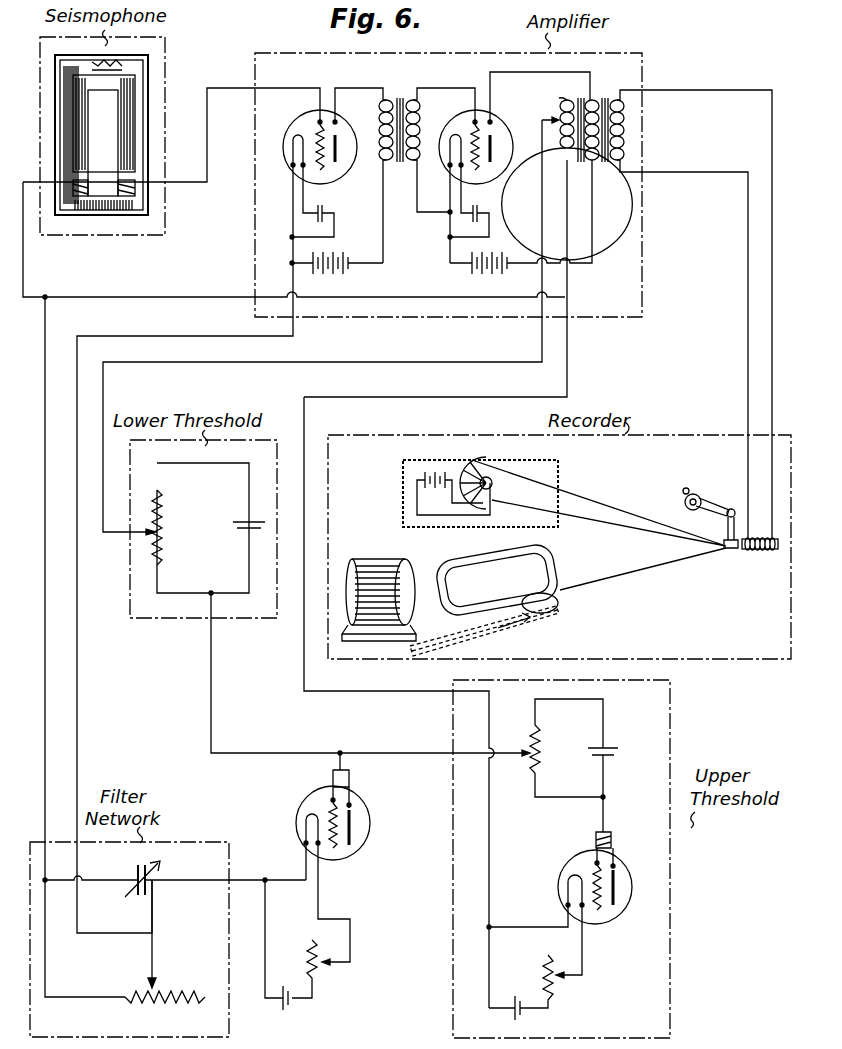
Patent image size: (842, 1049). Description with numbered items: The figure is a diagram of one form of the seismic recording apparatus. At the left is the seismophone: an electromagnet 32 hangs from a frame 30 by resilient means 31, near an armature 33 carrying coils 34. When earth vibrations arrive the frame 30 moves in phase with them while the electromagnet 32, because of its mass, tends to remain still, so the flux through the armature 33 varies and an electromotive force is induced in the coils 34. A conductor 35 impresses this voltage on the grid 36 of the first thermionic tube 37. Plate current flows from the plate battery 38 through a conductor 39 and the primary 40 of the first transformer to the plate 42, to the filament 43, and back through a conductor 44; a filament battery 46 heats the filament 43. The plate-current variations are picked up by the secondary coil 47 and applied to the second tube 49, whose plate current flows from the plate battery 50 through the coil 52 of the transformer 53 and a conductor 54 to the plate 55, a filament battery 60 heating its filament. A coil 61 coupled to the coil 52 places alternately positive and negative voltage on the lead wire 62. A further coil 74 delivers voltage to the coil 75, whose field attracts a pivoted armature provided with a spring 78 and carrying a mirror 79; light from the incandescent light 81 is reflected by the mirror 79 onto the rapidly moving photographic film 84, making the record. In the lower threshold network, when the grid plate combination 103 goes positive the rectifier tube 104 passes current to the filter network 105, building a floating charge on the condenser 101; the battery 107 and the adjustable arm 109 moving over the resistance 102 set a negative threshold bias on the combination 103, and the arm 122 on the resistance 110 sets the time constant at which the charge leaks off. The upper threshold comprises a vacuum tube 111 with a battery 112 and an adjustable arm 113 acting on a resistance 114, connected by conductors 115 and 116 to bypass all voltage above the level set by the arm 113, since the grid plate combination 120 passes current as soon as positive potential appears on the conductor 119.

The frame 30 is at (148, 72).
The resilient means 31 is at (109, 60).
The electromagnet 32 is at (135, 118).
The armature 33 is at (110, 215).
The coils 34 is at (135, 192).
The conductor 35 is at (207, 146).
The grid 36 is at (320, 122).
The thermionic tube 37 is at (327, 182).
The plate battery 38 is at (338, 255).
The conductor 39 is at (383, 232).
The primary 40 is at (382, 116).
The plate 42 is at (336, 150).
The filament 43 is at (293, 140).
The conductor 44 is at (292, 260).
The filament battery 46 is at (324, 213).
The secondary coil 47 is at (418, 116).
The tube 49 is at (495, 110).
The plate battery 50 is at (491, 252).
The coil 52 is at (598, 96).
The transformer 53 is at (604, 164).
The conductor 54 is at (548, 78).
The plate 55 is at (492, 133).
The filament battery 60 is at (479, 211).
The coil 61 is at (566, 160).
The conductor 62 is at (461, 362).
The coil 74 is at (630, 140).
The coil 75 is at (760, 548).
The spring 78 is at (698, 498).
The mirror 79 is at (728, 548).
The incandescent light 81 is at (492, 484).
The photographic film 84 is at (516, 620).
The condenser 101 is at (152, 868).
The resistance 102 is at (164, 520).
The grid plate combination 103 is at (349, 780).
The rectifier tube 104 is at (370, 823).
The filter network 105 is at (204, 841).
The battery 107 is at (242, 528).
The adjustable arm 109 is at (114, 532).
The resistance 110 is at (172, 988).
The vacuum tube 111 is at (619, 861).
The battery 112 is at (618, 750).
The adjustable arm 113 is at (492, 753).
The resistance 114 is at (540, 737).
The conductor 115 is at (422, 740).
The conductor 116 is at (566, 362).
The conductor 119 is at (284, 753).
The grid plate combination 120 is at (611, 838).
The arm 122 is at (154, 958).